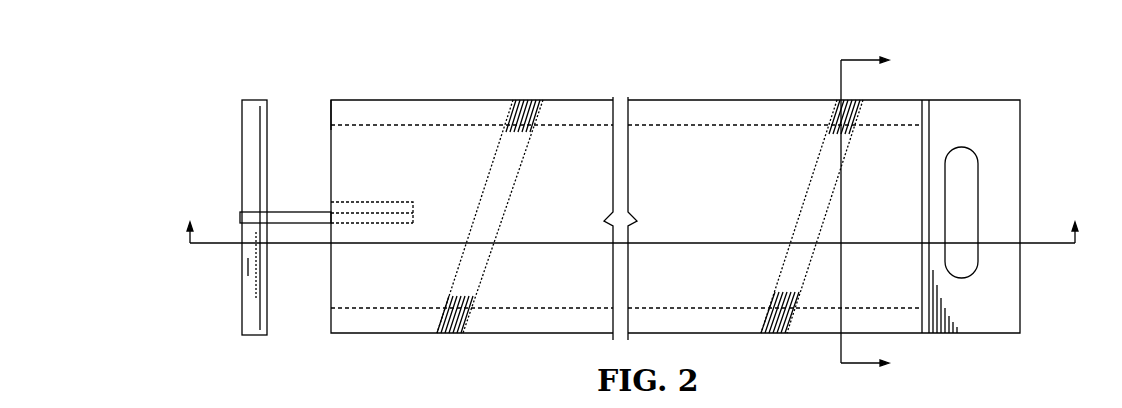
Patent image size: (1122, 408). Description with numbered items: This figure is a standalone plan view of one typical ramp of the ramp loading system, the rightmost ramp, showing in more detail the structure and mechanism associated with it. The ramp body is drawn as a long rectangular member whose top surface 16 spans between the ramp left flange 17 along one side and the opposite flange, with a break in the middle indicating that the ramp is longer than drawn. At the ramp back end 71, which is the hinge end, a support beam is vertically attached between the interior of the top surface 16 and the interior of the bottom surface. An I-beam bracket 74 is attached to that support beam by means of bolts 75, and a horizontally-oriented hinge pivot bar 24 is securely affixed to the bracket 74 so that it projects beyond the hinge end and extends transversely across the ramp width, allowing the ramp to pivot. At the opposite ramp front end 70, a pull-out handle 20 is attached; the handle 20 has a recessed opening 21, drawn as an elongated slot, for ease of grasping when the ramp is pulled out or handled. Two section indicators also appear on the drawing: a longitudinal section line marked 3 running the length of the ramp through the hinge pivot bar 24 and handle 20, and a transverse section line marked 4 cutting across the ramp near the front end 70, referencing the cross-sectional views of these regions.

The ramp left flange 17 is at (560, 334).
The ramp top surface 16 is at (760, 136).
The ramp front end 70 is at (906, 100).
The recessed opening 21 is at (962, 148).
The handle 20 is at (1005, 290).
The hinge pivot bar 24 is at (242, 297).
The I-beam bracket 74 is at (284, 212).
The bolt 75 is at (371, 204).
The ramp back end 71 is at (330, 112).
The truck sidewall 3 is at (630, 219).
The truck back wall 4 is at (873, 211).